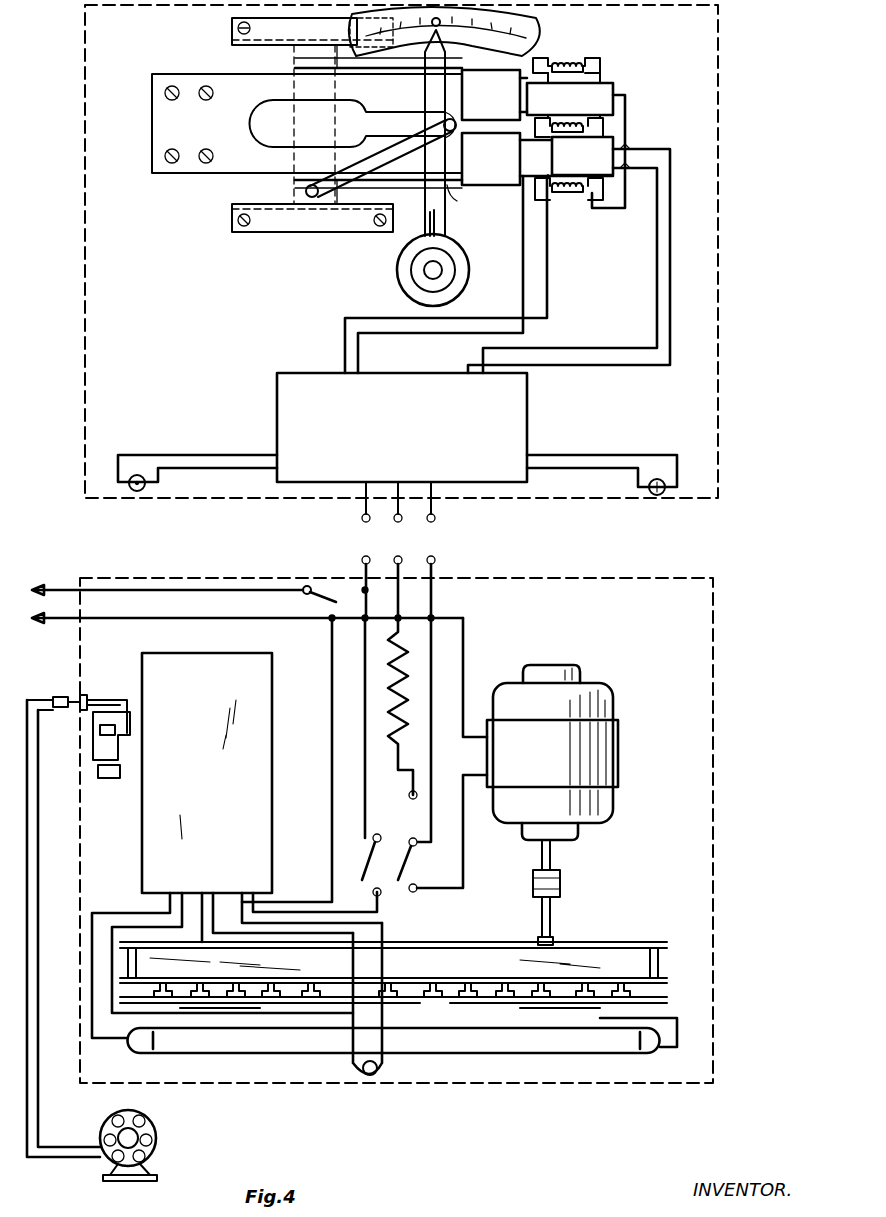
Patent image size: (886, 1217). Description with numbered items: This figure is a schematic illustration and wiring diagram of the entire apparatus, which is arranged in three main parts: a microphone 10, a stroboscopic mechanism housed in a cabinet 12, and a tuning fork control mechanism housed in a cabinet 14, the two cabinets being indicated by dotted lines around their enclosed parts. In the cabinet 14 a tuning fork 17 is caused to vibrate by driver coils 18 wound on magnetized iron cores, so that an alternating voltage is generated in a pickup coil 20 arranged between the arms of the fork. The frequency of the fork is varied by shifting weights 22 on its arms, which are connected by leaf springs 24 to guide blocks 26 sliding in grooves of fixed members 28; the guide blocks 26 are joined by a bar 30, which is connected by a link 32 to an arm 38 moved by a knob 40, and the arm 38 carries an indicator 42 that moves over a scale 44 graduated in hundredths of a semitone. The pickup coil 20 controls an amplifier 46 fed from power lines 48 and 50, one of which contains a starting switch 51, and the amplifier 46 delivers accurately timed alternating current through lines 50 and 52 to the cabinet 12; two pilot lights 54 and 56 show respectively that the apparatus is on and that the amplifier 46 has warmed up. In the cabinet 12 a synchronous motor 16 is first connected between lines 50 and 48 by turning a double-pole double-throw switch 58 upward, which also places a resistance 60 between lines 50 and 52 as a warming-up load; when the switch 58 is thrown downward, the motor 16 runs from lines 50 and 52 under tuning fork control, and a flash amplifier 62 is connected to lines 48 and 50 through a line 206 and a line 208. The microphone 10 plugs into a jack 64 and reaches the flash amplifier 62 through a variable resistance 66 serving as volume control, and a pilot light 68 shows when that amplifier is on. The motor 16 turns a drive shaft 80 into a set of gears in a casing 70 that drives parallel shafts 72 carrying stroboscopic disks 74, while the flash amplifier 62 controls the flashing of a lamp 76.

The microphone 10 is at (156, 1128).
The cabinet 12 is at (713, 680).
The cabinet 14 is at (718, 228).
The synchronous motor 16 is at (592, 760).
The tuning fork 17 is at (196, 90).
The driver coils 18 is at (566, 55).
The pickup coil 20 is at (575, 120).
The weights 22 is at (490, 192).
The leaf springs 24 is at (463, 204).
The guide blocks 26 is at (293, 58).
The fixed members 28 is at (248, 34).
The bar 30 is at (301, 124).
The link 32 is at (384, 146).
The arm 38 is at (430, 215).
The knob 40 is at (452, 277).
The indicator 42 is at (425, 52).
The scale 44 is at (474, 46).
The amplifier 46 is at (527, 408).
The power line 48 is at (360, 496).
The power line 50 is at (500, 56).
The starting switch 51 is at (318, 582).
The line 52 is at (434, 578).
The pilot light 54 is at (660, 498).
The pilot light 56 is at (137, 495).
The double-pole double-throw switch 58 is at (352, 858).
The resistance 60 is at (398, 675).
The flash amplifier 62 is at (255, 716).
The jack 64 is at (86, 694).
The variable resistance 66 is at (113, 750).
The pilot light 68 is at (366, 1078).
The casing 70 is at (614, 963).
The shafts 72 is at (468, 987).
The stroboscopic disks 74 is at (487, 1010).
The lamp 76 is at (258, 1045).
The drive shaft 80 is at (552, 908).
The line 206 is at (330, 740).
The line 208 is at (293, 918).